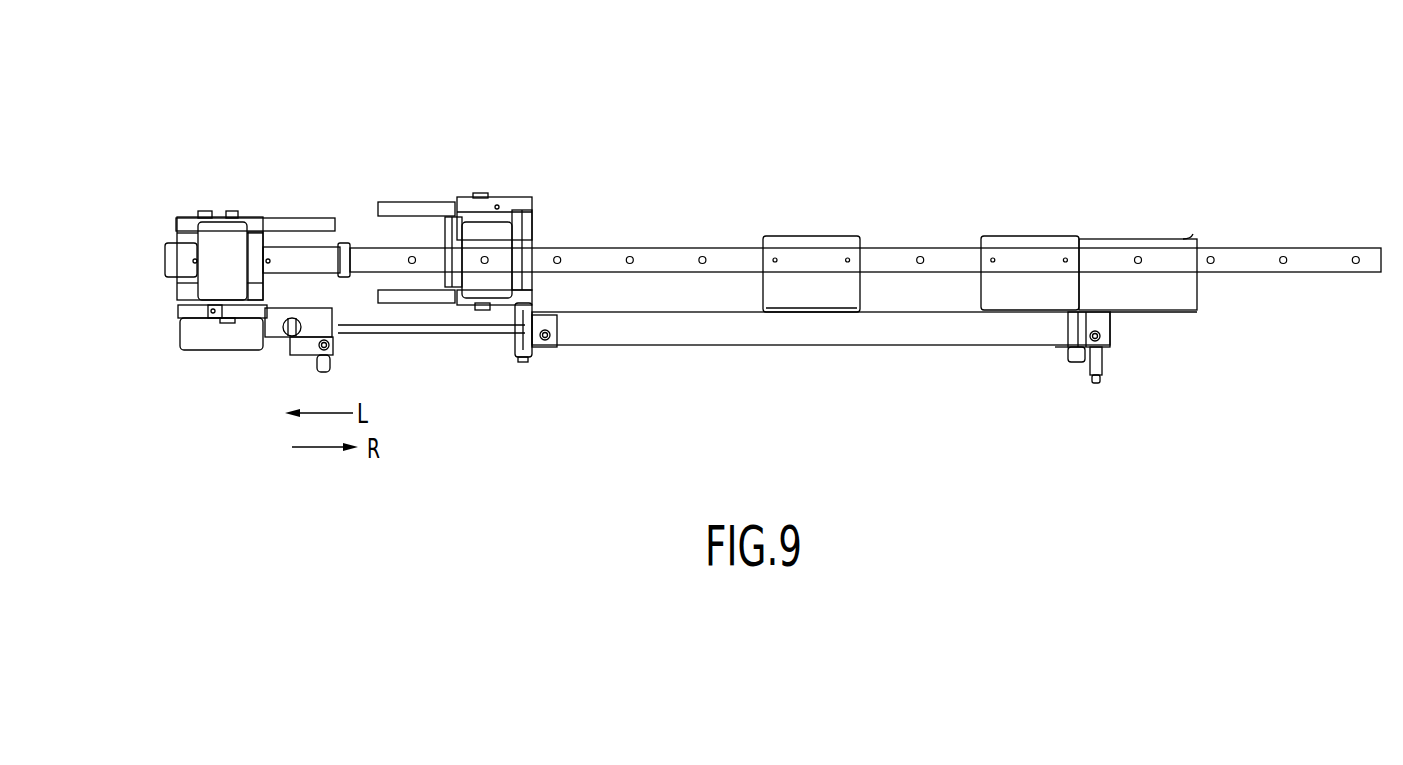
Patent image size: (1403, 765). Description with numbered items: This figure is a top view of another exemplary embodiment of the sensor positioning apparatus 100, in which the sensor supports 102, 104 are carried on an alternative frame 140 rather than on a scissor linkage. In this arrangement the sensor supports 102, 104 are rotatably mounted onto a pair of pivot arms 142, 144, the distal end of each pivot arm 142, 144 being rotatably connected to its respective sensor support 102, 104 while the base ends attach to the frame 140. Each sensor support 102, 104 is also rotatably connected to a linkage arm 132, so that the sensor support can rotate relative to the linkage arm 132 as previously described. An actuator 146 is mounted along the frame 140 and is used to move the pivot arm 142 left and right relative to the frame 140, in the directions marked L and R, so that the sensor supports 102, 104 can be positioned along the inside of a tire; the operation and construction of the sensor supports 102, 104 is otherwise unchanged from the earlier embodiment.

The linear actuator assembly 100 is at (495, 148).
The sensor support 102 is at (185, 261).
The sensor support 104 is at (548, 218).
The linkage arm 132 is at (463, 214).
The frame 140 is at (668, 256).
The pivot arm 142 is at (410, 202).
The pivot arm 144 is at (305, 220).
The actuator 146 is at (752, 332).